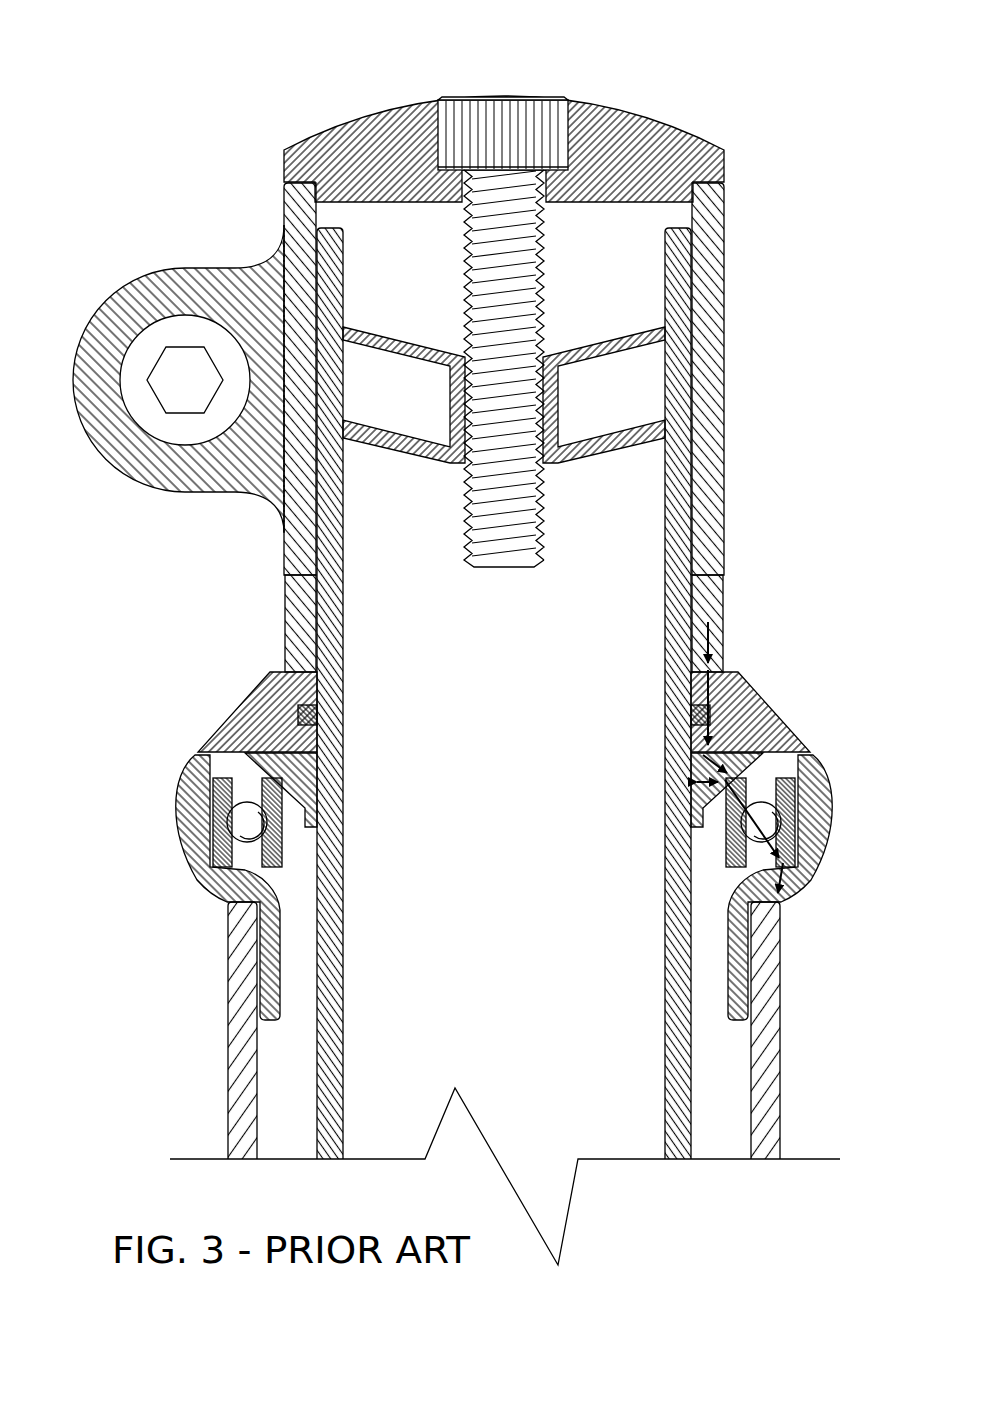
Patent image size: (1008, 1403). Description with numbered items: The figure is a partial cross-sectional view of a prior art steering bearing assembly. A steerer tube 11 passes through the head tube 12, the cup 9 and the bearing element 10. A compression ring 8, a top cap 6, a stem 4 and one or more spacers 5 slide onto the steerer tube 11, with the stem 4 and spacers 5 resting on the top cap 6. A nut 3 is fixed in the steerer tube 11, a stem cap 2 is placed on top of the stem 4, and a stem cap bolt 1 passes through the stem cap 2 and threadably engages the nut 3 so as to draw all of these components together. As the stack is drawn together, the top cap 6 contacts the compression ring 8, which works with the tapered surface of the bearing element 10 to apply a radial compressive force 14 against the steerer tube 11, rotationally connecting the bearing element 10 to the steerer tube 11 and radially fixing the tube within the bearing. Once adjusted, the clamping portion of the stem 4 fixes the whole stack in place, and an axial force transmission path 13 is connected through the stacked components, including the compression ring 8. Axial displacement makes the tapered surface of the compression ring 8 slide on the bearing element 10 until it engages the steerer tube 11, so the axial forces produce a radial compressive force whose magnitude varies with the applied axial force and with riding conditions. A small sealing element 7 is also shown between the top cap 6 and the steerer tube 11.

The stem cap bolt 1 is at (471, 113).
The stem cap 2 is at (388, 125).
The nut 3 is at (575, 355).
The stem 4 is at (207, 268).
The spacer 5 is at (300, 620).
The top cap 6 is at (270, 698).
The seal 7 is at (318, 705).
The compression ring 8 is at (288, 767).
The cup 9 is at (190, 828).
The bearing element 10 is at (272, 806).
The steerer tube 11 is at (330, 965).
The head tube 12 is at (240, 998).
The axial force transmission path 13 is at (712, 688).
The radial compressive force 14 is at (714, 795).